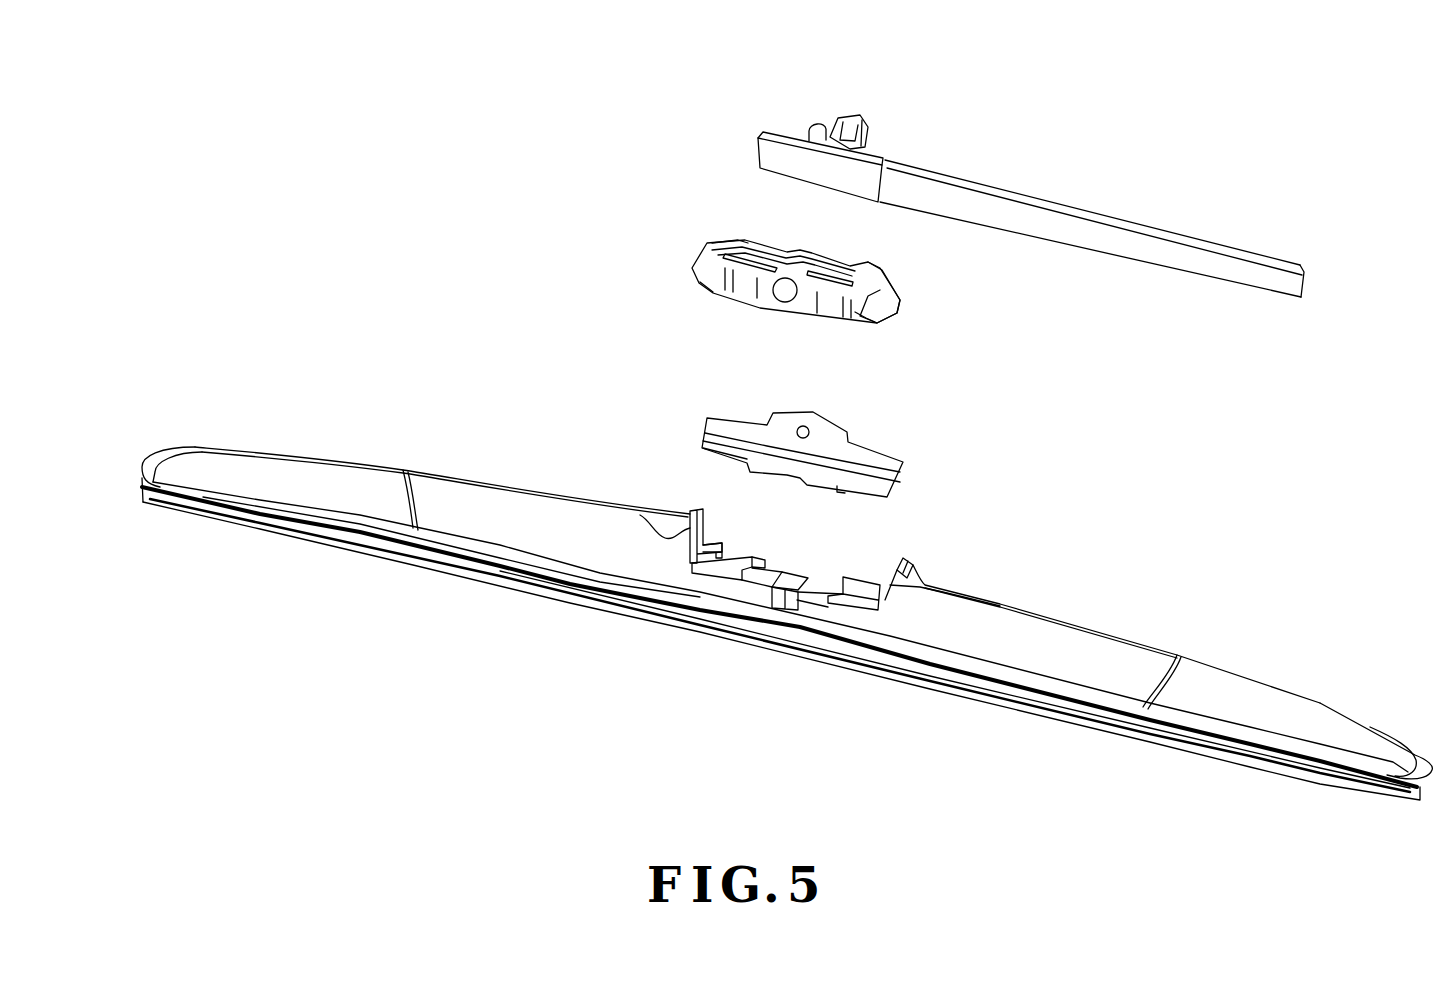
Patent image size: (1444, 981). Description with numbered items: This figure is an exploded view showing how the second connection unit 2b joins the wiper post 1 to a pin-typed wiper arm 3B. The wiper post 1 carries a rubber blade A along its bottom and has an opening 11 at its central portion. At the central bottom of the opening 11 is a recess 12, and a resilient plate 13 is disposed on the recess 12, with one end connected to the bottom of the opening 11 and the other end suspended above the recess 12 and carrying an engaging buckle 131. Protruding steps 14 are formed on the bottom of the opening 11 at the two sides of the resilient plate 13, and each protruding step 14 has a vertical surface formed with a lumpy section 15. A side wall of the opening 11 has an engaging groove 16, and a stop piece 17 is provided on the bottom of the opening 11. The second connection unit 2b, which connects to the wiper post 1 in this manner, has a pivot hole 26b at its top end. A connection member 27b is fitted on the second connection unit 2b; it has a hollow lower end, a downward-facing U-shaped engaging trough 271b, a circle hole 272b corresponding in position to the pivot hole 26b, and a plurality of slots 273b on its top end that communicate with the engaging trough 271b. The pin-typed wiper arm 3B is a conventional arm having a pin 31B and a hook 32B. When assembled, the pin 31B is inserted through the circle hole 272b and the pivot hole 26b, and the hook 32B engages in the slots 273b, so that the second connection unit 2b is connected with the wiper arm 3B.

The wiper post 1 is at (1072, 640).
The opening 11 is at (797, 592).
The recess 12 is at (782, 603).
The resilient plate 13 is at (790, 574).
The engaging buckle 131 is at (757, 637).
The protruding steps 14 is at (707, 570).
The lumpy section 15 is at (762, 567).
The engaging groove 16 is at (660, 523).
The stop piece 17 is at (712, 540).
The second connection unit 2b is at (871, 423).
The pivot hole 26b is at (797, 427).
The connection member 27b is at (810, 301).
The U-shaped engaging trough 271b is at (887, 297).
The circle hole 272b is at (783, 294).
The slots 273b is at (727, 240).
The pin-typed wiper arm 3B is at (1052, 220).
The pin 31B is at (814, 126).
The hook 32B is at (860, 118).
The rubber blade A is at (1227, 743).